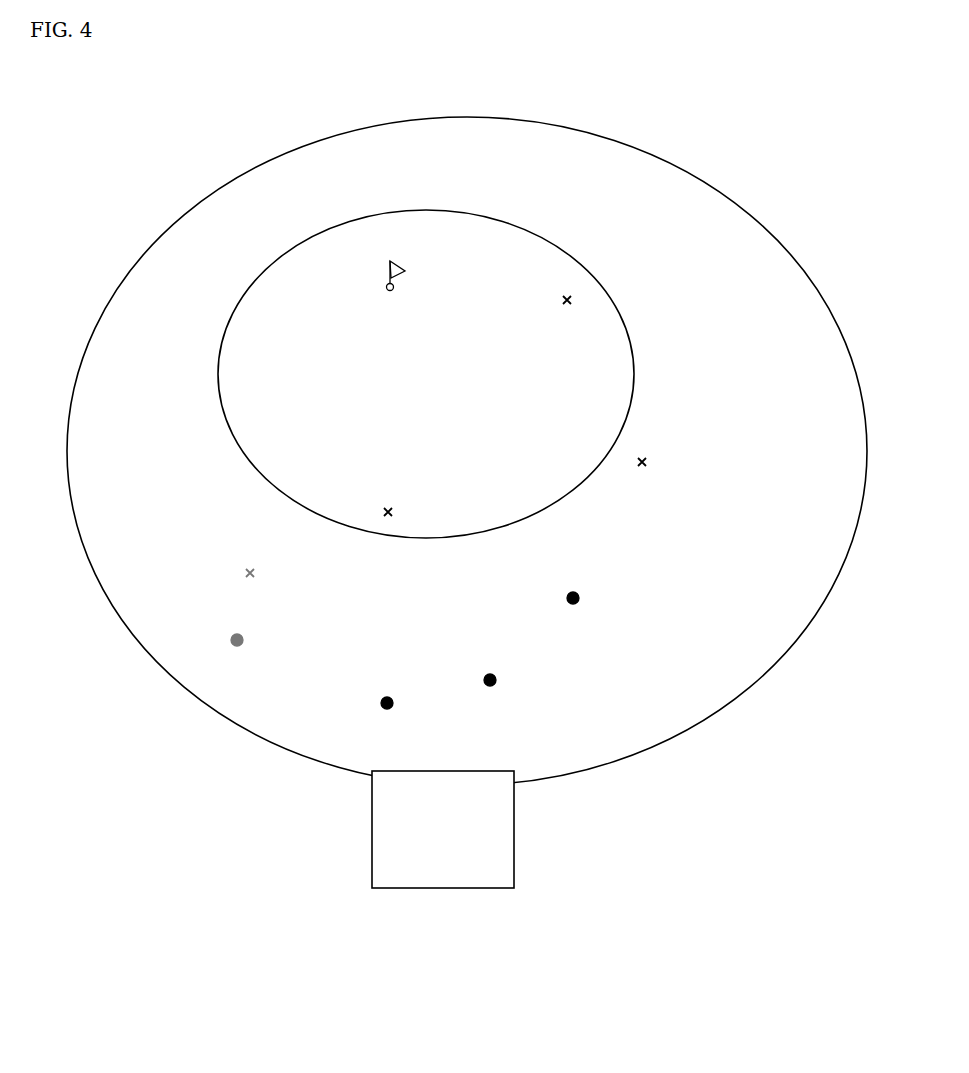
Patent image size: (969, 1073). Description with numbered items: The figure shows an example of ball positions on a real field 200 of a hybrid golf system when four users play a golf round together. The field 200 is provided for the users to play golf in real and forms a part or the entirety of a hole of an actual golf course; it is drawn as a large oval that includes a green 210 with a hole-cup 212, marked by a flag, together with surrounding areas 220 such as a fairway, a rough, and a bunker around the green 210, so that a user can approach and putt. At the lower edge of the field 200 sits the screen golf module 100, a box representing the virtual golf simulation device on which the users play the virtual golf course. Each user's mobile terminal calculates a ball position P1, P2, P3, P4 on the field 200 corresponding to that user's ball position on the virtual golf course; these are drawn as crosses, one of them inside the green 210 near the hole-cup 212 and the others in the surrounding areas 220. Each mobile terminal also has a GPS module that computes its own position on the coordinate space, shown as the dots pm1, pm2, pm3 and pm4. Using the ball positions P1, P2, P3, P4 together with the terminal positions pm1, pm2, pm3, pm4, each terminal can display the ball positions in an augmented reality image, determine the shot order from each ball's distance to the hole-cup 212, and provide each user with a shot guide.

The screen golf module 100 is at (503, 841).
The field 200 is at (467, 451).
The green 210 is at (624, 356).
The hole-cup 212 is at (386, 286).
The surrounding areas 220 is at (727, 683).
The ball position P1 is at (266, 575).
The ball position P2 is at (402, 513).
The ball position P3 is at (656, 463).
The ball position P4 is at (581, 301).
The mobile terminal position pm1 is at (236, 654).
The mobile terminal position pm2 is at (384, 720).
The mobile terminal position pm3 is at (491, 695).
The mobile terminal position pm4 is at (576, 613).